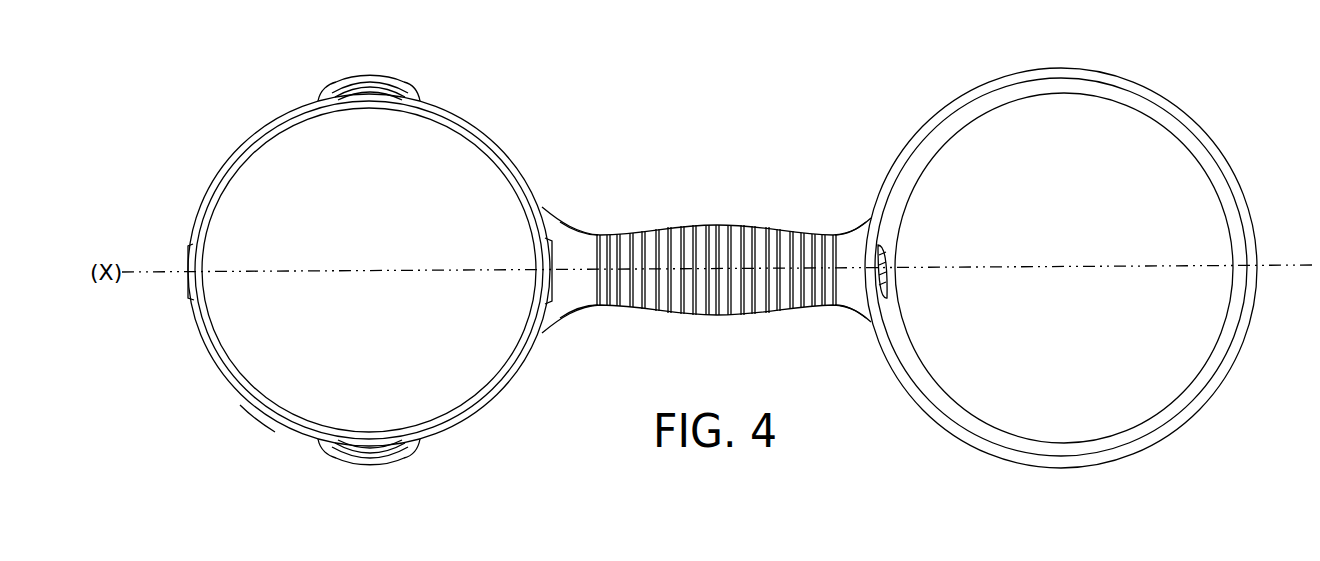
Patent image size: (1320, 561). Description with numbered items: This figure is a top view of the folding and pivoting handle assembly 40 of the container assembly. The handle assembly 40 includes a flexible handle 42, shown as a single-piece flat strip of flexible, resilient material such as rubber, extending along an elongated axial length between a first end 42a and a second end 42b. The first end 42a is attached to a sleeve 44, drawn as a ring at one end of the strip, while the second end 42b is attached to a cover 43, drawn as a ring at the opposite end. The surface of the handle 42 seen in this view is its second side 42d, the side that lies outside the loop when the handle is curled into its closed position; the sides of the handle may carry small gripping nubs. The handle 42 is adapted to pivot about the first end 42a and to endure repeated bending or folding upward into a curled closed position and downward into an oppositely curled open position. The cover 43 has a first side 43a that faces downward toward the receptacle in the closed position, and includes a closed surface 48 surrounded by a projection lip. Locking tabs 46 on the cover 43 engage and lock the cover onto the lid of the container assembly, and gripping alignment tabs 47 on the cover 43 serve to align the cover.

The handle assembly 40 is at (628, 113).
The flexible handle 42 is at (670, 227).
The first end 42a is at (856, 297).
The second end 42b is at (565, 297).
The second side 42d is at (717, 450).
The cover 43 is at (288, 147).
The first side of the cover 43a is at (425, 383).
The sleeve 44 is at (1193, 123).
The locking tabs 46 is at (186, 278).
The gripping alignment tabs 47 is at (393, 77).
The closed surface 48 is at (258, 426).